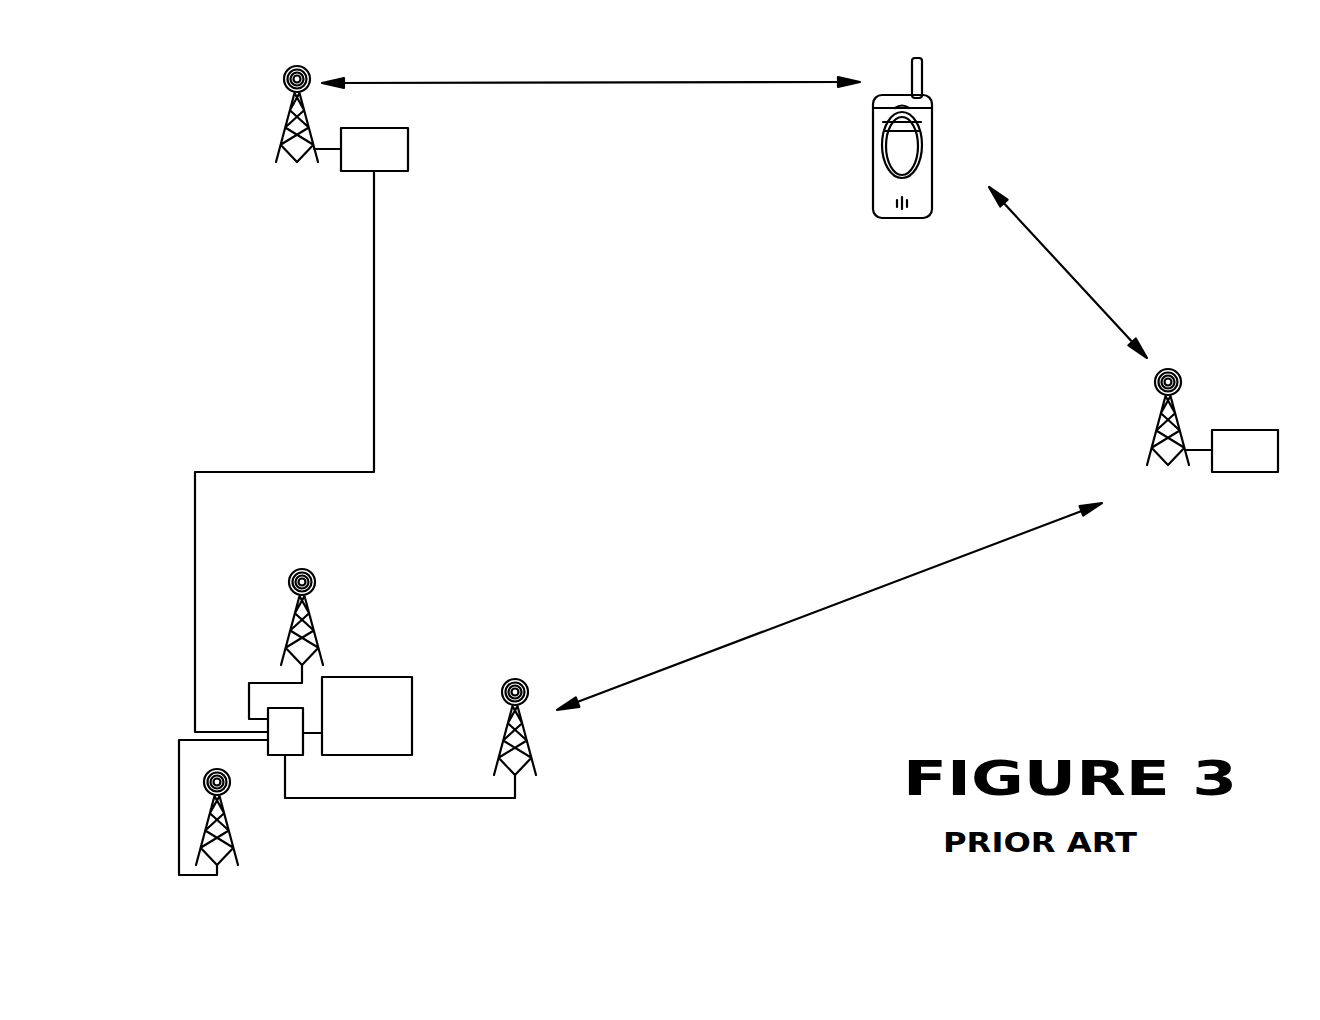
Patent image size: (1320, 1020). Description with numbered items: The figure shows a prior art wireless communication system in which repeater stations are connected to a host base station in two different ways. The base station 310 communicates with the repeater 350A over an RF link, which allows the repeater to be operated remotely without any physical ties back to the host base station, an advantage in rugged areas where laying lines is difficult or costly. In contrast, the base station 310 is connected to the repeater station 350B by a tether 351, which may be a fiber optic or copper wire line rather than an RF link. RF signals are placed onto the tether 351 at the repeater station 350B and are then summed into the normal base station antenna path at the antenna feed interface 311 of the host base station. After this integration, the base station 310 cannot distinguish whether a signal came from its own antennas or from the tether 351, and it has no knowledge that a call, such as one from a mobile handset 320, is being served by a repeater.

The mobile station 320 is at (931, 122).
The repeater 350A is at (1228, 438).
The repeater station 350B is at (377, 133).
The tether 351 is at (374, 377).
The base station 310 is at (412, 755).
The antenna feed interface 311 is at (303, 755).